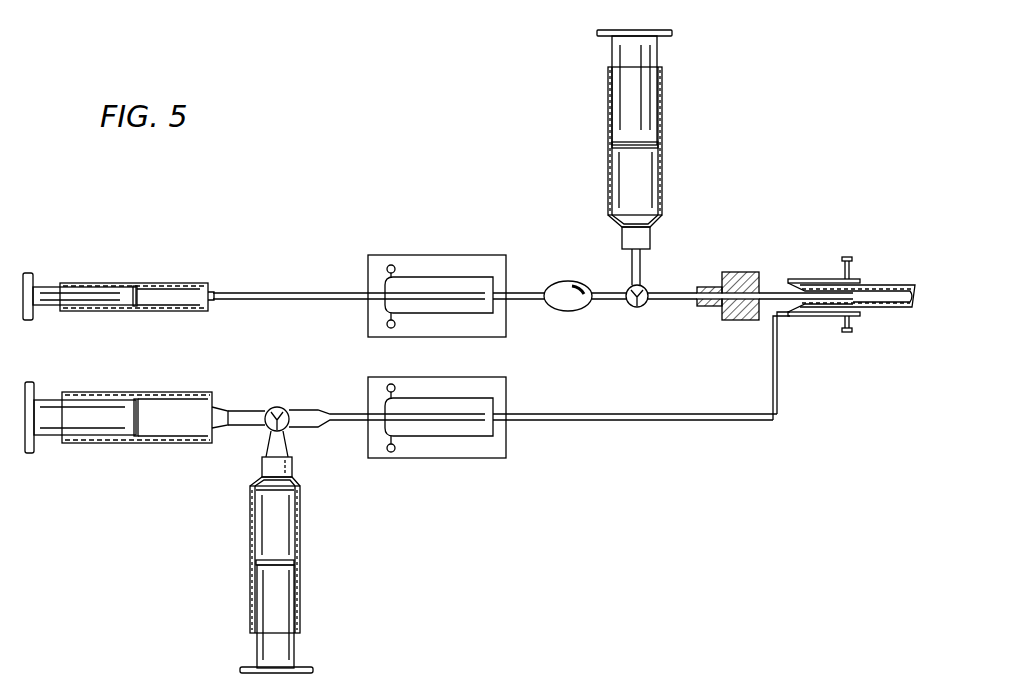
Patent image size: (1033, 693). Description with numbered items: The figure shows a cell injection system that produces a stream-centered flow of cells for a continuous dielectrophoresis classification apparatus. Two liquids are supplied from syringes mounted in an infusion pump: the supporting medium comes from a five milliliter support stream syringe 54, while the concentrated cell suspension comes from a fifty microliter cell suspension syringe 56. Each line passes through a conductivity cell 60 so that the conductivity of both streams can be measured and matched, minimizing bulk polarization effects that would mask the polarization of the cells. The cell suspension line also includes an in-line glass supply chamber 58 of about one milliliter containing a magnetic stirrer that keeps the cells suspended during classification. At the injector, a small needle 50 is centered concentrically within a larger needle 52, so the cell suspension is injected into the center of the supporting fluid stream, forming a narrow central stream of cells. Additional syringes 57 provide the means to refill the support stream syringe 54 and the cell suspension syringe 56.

The small needle 50 is at (772, 278).
The larger needle 52 is at (893, 290).
The support stream syringe 54 is at (150, 445).
The cell suspension syringe 56 is at (165, 283).
The refill syringes 57 is at (662, 97).
The in-line glass supply chamber 58 is at (560, 281).
The conductivity cells 60 is at (368, 275).